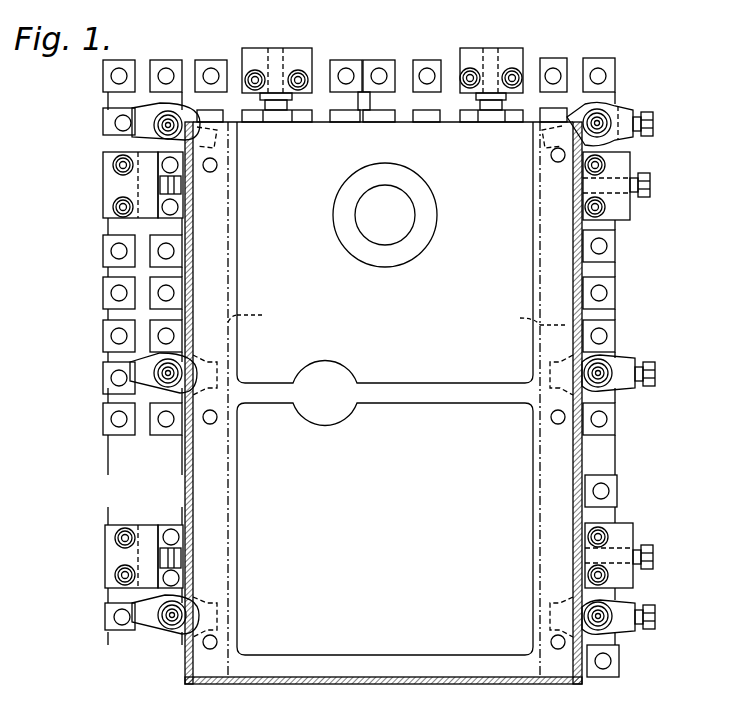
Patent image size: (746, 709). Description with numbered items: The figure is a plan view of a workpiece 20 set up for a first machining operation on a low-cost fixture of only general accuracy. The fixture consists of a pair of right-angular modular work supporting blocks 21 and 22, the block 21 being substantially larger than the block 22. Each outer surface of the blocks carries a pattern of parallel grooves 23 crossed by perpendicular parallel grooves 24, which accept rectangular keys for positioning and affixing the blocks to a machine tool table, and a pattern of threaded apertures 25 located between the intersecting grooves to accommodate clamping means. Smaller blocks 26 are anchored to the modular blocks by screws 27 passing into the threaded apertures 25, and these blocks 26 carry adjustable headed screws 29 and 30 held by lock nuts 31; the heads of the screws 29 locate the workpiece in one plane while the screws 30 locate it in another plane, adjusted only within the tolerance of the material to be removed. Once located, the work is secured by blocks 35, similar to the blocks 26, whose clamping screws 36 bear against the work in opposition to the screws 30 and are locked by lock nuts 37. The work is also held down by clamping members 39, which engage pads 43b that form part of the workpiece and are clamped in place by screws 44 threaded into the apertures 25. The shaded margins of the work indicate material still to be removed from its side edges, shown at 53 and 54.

The workpiece 20 is at (585, 312).
The work supporting block 21 is at (628, 244).
The work supporting block 22 is at (620, 487).
The parallel grooves 23 is at (445, 72).
The parallel grooves 24 is at (103, 276).
The threaded apertures 25 is at (210, 76).
The blocks 26 is at (297, 52).
The screws 27 is at (255, 72).
The headed screws 29 is at (283, 102).
The headed screws 30 is at (183, 185).
The lock nuts 31 is at (262, 100).
The blocks 35 is at (620, 165).
The clamping screws 36 is at (655, 183).
The lock nuts 37 is at (640, 195).
The clamping members 39 is at (135, 110).
The pads 43b is at (396, 318).
The screws 44 is at (190, 147).
The material to be removed from side edges 53 is at (190, 450).
The material to be removed from side edge 54 is at (318, 683).